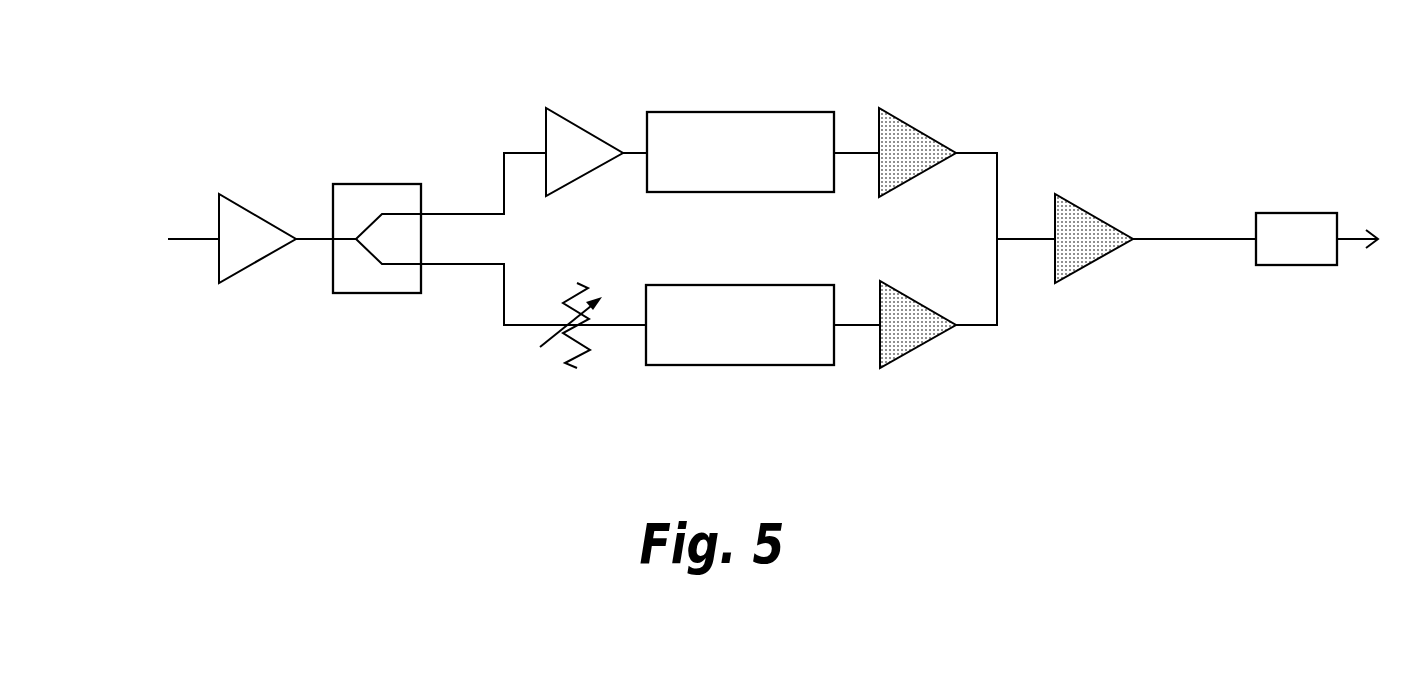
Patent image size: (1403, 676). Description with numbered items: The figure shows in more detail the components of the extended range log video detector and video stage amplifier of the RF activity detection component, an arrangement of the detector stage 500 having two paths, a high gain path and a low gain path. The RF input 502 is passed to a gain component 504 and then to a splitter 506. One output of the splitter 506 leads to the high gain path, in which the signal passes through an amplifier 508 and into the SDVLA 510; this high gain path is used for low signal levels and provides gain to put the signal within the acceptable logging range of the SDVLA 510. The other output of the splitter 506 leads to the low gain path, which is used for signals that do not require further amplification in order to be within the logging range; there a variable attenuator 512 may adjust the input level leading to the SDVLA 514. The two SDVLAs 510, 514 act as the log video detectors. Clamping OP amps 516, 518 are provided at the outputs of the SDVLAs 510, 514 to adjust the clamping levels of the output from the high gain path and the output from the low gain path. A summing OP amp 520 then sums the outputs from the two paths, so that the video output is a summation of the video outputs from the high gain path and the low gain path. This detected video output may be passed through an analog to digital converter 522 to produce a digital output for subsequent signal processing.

The RF detector system 500 is at (433, 390).
The RF input 502 is at (150, 272).
The gain component 504 is at (248, 213).
The splitter 506 is at (368, 183).
The amplifier 508 is at (583, 127).
The SDVLA 510 is at (725, 110).
The variable attenuator 512 is at (578, 357).
The SDVLA 514 is at (722, 365).
The clamping OP amp 516 is at (925, 130).
The clamping OP amp 518 is at (910, 298).
The summing OP amp 520 is at (1090, 213).
The analog to digital converter (ADC) 522 is at (1287, 267).